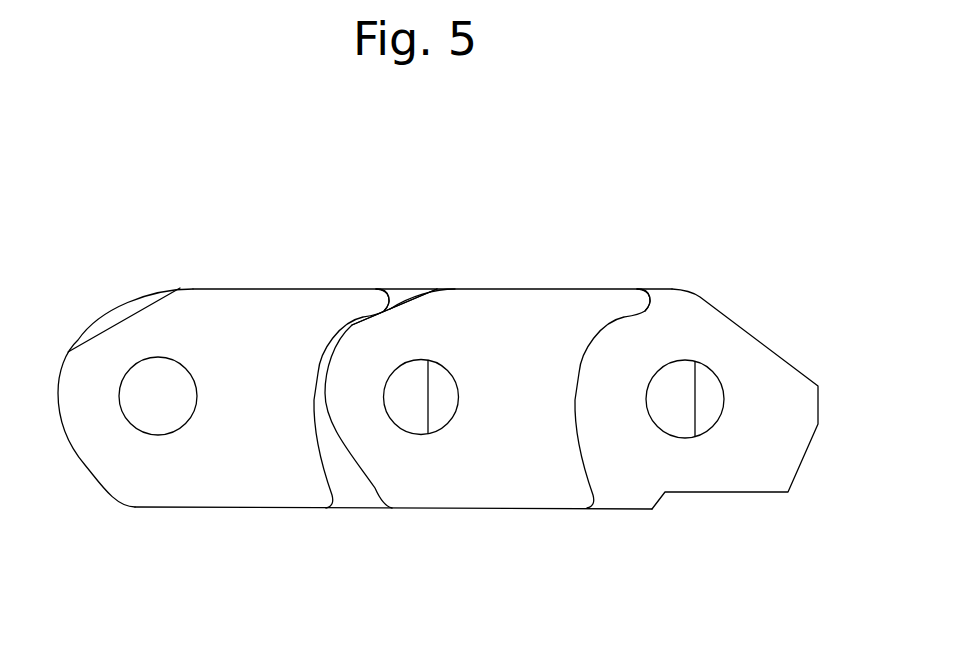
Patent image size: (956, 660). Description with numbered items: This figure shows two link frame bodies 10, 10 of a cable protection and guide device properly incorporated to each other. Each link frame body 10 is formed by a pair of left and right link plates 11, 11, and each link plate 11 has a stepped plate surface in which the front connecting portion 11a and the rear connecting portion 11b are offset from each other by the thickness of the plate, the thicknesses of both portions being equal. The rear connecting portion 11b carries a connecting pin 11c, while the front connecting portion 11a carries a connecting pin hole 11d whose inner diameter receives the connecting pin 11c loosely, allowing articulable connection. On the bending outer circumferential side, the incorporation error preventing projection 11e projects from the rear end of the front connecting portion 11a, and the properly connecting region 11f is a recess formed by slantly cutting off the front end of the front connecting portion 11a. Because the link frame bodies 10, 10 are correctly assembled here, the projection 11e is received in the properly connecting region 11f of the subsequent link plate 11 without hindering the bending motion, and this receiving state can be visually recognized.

The link frame body 10 is at (240, 288).
The link plate 11 is at (438, 427).
The front connecting portion 11a is at (227, 487).
The rear connecting portion 11b is at (357, 497).
The connecting pin 11c is at (412, 422).
The connecting pin hole 11d is at (188, 380).
The incorporation error preventing projection 11e is at (370, 303).
The properly connecting region 11f is at (123, 320).